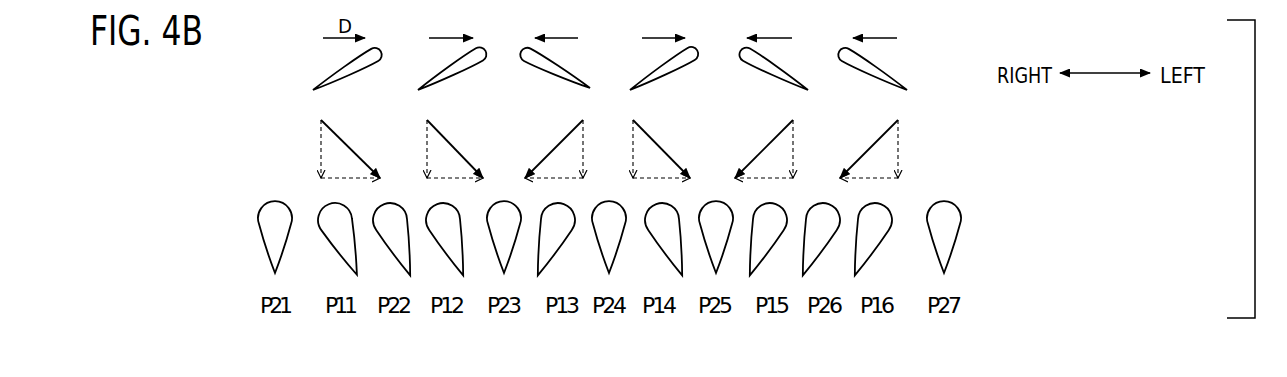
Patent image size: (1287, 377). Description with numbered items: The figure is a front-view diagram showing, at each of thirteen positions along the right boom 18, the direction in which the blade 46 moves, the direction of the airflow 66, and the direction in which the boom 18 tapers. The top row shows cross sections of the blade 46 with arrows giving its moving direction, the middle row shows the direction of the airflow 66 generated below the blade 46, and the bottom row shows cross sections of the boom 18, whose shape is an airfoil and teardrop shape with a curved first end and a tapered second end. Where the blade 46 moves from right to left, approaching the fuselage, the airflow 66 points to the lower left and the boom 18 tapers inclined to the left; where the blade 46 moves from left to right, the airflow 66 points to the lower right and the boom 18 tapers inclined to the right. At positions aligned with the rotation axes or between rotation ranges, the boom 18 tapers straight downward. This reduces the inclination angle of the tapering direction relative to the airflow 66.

The blade 46 is at (332, 72).
The airflow 66 is at (333, 130).
The boom 18 is at (263, 206).